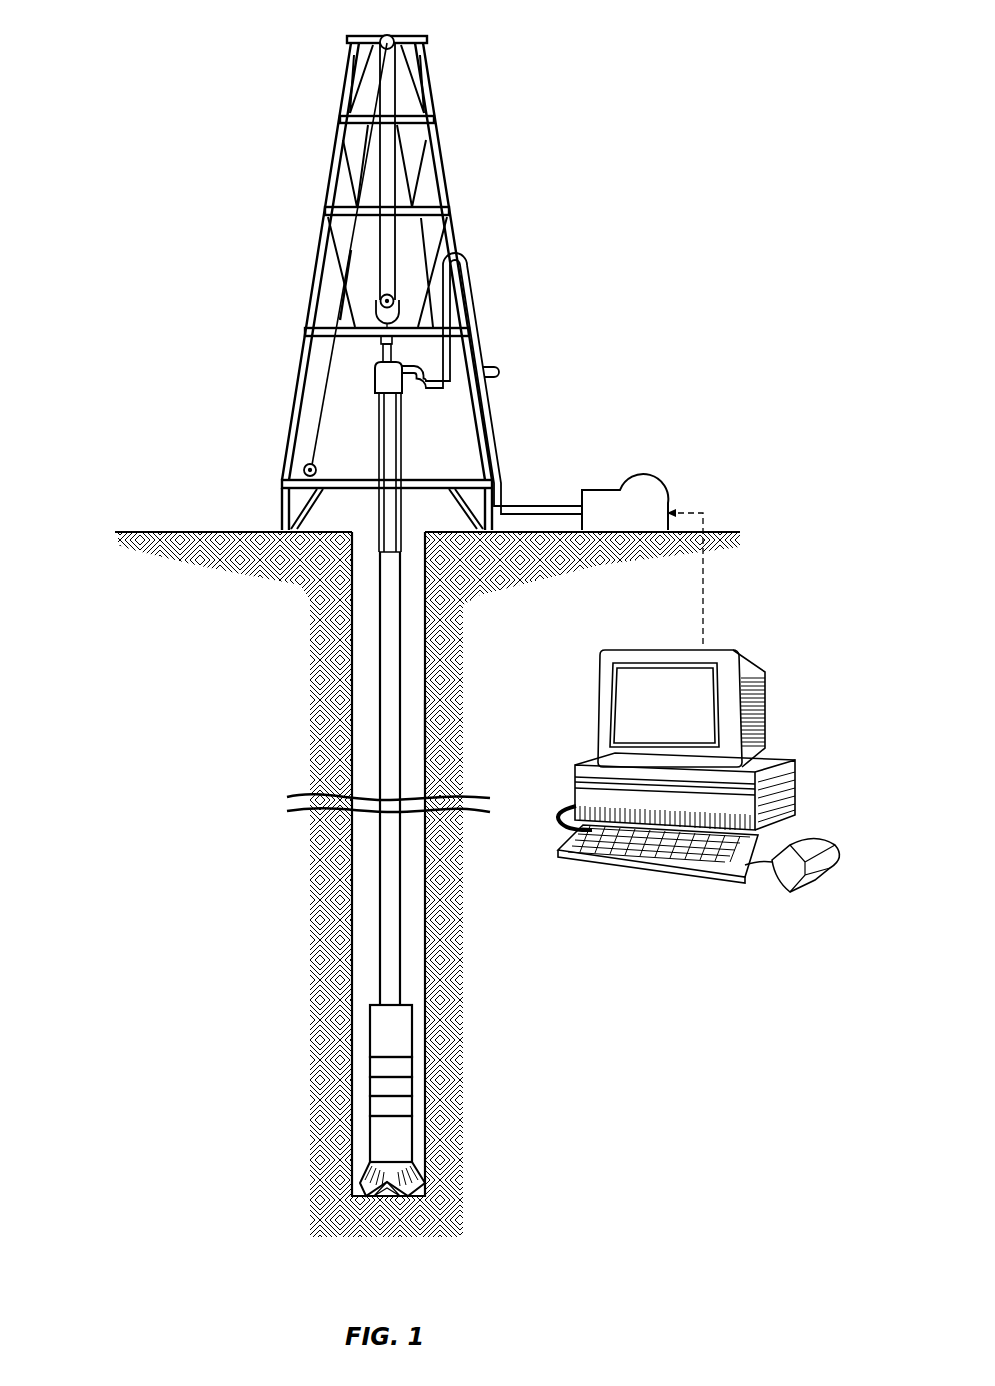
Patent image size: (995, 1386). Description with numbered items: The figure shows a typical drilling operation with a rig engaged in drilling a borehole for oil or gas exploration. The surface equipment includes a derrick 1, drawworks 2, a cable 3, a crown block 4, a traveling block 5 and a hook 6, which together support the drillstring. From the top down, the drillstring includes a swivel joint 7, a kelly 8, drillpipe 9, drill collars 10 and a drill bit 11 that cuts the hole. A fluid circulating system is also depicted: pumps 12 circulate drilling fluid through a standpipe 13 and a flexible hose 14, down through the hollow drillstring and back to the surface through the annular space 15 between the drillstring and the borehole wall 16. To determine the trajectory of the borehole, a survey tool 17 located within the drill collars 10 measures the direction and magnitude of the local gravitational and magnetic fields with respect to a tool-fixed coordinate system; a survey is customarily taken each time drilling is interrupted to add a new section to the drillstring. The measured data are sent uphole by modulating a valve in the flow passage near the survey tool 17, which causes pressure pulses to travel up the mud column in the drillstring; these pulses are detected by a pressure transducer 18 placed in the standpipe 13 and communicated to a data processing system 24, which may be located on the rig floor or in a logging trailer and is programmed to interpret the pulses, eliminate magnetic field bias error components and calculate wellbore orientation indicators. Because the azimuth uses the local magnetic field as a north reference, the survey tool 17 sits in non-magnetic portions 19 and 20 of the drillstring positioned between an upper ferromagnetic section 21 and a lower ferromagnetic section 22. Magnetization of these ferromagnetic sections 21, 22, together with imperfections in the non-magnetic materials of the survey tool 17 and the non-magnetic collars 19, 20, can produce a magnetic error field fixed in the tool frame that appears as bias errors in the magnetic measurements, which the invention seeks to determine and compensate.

The derrick 1 is at (327, 187).
The drawworks 2 is at (305, 473).
The cable 3 is at (320, 315).
The crown block 4 is at (383, 35).
The traveling block 5 is at (375, 300).
The hook 6 is at (380, 339).
The swivel joint 7 is at (373, 378).
The kelly 8 is at (377, 532).
The drillpipe 9 is at (378, 673).
The drill collars 10 is at (352, 1062).
The drill bit 11 is at (372, 1170).
The pumps 12 is at (653, 493).
The standpipe 13 is at (502, 480).
The flexible hose 14 is at (443, 370).
The annular space 15 is at (412, 728).
The borehole wall 16 is at (448, 648).
The survey tool 17 is at (400, 1085).
The pressure transducer 18 is at (498, 373).
The non-magnetic portion 19 is at (400, 1059).
The non-magnetic portion 20 is at (400, 1108).
The upper ferromagnetic section 21 is at (400, 1033).
The lower ferromagnetic section 22 is at (400, 1145).
The data processing system 24 is at (782, 615).